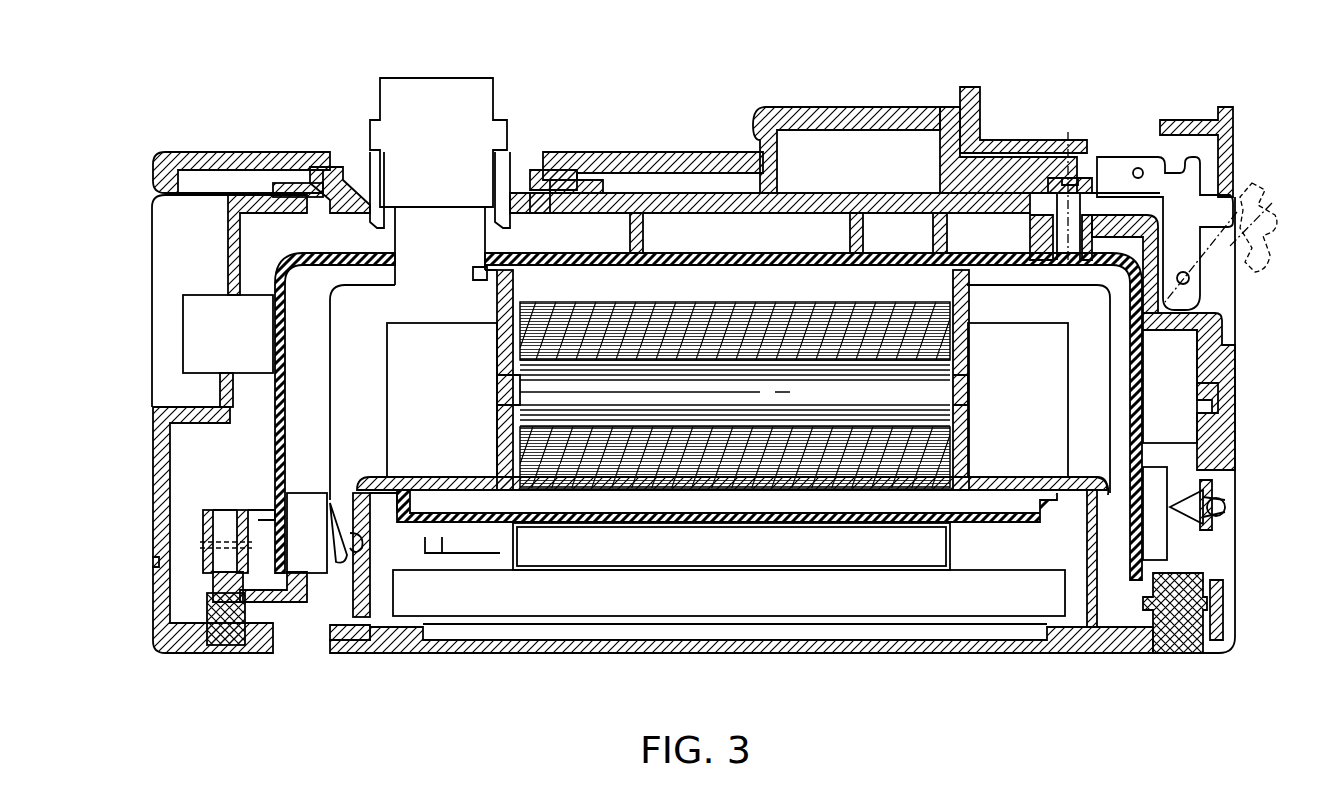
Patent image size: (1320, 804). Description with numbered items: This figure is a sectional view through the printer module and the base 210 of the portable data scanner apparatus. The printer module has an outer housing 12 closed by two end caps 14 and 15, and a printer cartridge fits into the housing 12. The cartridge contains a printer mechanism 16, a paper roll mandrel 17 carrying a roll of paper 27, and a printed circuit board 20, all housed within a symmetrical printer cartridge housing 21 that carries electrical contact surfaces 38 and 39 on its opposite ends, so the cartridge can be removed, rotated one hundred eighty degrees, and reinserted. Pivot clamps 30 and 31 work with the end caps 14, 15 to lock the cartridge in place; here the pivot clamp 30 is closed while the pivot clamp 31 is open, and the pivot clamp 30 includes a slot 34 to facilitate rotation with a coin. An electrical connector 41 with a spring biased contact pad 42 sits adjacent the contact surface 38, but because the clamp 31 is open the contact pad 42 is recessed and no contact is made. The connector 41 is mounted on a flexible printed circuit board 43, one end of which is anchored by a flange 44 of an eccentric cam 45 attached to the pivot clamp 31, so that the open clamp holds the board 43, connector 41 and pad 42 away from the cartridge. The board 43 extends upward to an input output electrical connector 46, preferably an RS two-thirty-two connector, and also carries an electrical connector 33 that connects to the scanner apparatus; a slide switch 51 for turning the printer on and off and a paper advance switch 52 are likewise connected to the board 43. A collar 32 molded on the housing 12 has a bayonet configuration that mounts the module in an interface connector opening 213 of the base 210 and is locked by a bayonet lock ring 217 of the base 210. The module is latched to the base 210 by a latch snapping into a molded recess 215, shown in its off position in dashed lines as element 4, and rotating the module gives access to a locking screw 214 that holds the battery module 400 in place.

The gear 4 is at (1262, 212).
The outer housing 12 is at (1243, 374).
The end cap 14 is at (1238, 614).
The end cap 15 is at (152, 608).
The printer mechanism 16 is at (560, 602).
The paper roll mandrel 17 is at (525, 391).
The printed circuit board 20 is at (990, 523).
The printer cartridge housing 21 is at (965, 432).
The roll of paper 27 is at (512, 437).
The pivot clamp 30 is at (1212, 652).
The pivot clamp 31 is at (238, 652).
The collar 32 is at (548, 172).
The electrical connector 33 is at (462, 80).
The slot 34 is at (1168, 656).
The electrical contact surface 38 is at (360, 542).
The electrical contact surface 39 is at (1106, 492).
The electrical connector 41 is at (300, 495).
The spring biased contact pad 42 is at (338, 505).
The flexible printed circuit board 43 is at (812, 262).
The flange 44 is at (294, 604).
The eccentric cam 45 is at (258, 514).
The input output electrical connector 46 is at (195, 337).
The slide switch 51 is at (1240, 400).
The paper advance switch 52 is at (1238, 496).
The base 210 is at (268, 142).
The interface connector opening 213 is at (355, 168).
The locking screw 214 is at (1072, 185).
The molded recess 215 is at (1215, 178).
The bayonet lock ring 217 is at (560, 200).
The battery module 400 is at (970, 114).